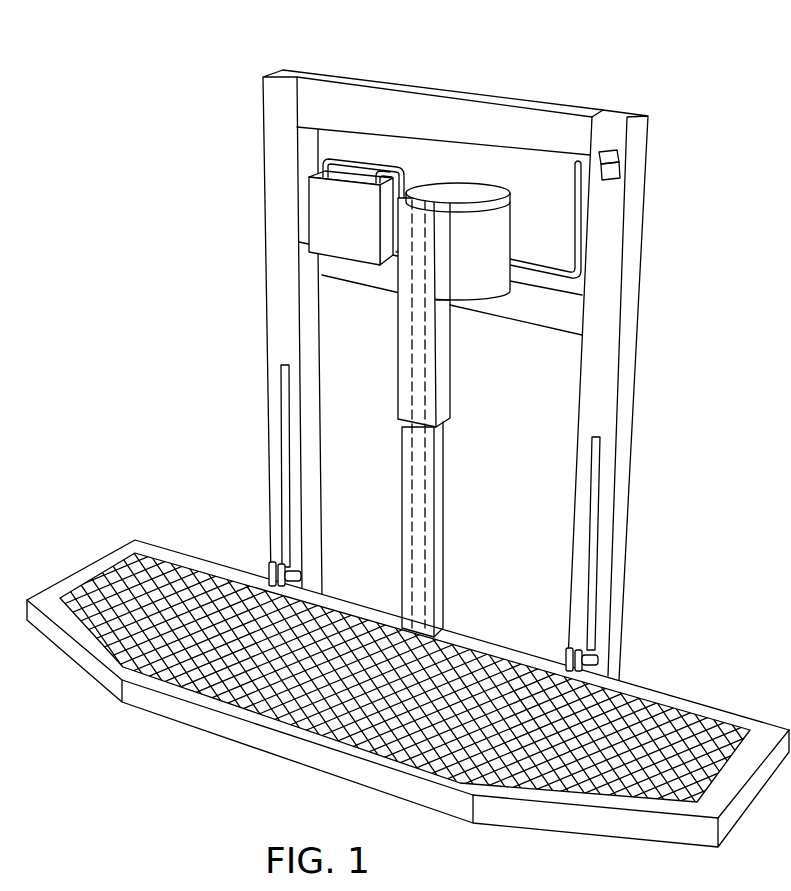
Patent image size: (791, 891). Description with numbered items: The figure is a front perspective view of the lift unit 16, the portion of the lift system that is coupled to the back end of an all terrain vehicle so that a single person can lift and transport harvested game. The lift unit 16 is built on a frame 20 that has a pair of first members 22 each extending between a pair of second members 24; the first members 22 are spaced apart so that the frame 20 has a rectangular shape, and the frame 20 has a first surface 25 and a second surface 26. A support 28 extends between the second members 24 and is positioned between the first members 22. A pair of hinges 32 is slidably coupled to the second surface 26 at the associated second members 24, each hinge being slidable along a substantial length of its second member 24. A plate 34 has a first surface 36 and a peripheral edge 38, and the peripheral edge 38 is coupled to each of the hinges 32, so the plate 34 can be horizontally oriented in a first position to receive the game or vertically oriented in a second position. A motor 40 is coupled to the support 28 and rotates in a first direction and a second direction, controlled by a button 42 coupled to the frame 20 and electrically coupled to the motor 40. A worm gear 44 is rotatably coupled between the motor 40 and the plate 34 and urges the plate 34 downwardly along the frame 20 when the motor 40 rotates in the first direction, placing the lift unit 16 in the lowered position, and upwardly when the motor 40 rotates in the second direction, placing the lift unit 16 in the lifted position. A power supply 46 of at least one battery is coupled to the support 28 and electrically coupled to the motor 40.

The lift unit 16 is at (98, 146).
The frame 20 is at (263, 80).
The first members 22 is at (453, 93).
The second members 24 is at (263, 305).
The first surface 25 is at (641, 242).
The second surface 26 is at (333, 112).
The support 28 is at (562, 317).
The hinges 32 is at (270, 562).
The plate 34 is at (135, 540).
The first surface 36 is at (76, 579).
The peripheral edge 38 is at (158, 705).
The motor 40 is at (490, 240).
The button 42 is at (608, 152).
The worm gear 44 is at (400, 372).
The power supply 46 is at (309, 200).